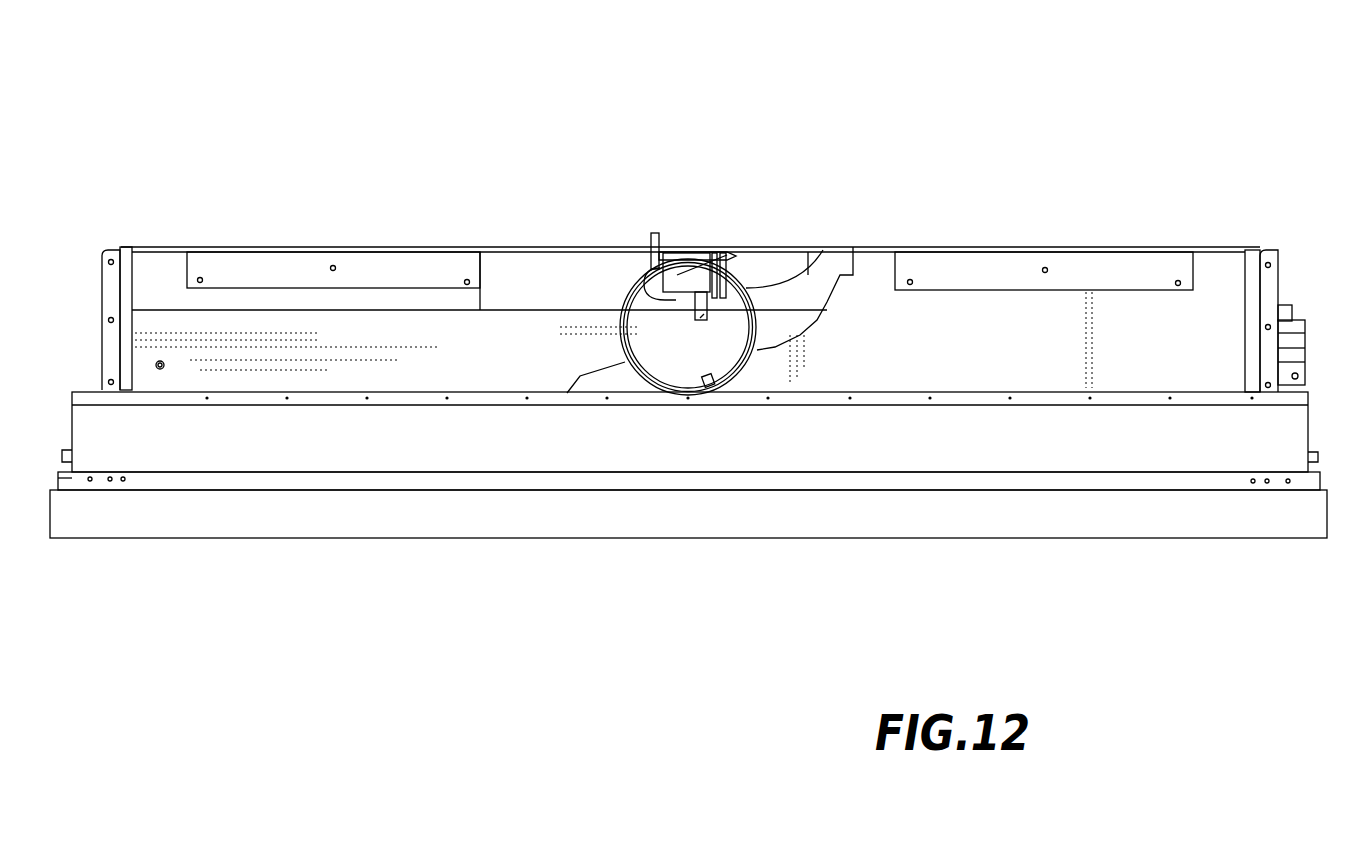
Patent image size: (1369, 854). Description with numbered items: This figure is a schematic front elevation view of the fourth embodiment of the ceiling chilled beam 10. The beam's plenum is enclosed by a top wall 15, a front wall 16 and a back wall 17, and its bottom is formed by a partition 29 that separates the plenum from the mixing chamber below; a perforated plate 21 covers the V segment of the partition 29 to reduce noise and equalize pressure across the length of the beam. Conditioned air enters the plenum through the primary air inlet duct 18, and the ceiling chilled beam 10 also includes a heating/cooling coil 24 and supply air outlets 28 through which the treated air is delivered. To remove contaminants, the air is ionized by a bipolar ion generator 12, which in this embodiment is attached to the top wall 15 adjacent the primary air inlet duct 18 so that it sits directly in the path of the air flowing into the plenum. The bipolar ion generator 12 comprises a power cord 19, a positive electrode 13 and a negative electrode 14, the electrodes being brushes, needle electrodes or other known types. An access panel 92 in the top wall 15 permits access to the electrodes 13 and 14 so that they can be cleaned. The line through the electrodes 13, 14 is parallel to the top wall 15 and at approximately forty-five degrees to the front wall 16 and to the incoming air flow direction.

The ceiling chilled beam 10 is at (291, 155).
The bipolar ion generator 12 is at (683, 272).
The positive electrode 13 is at (673, 298).
The negative electrode 14 is at (703, 317).
The top wall 15 is at (340, 248).
The front wall 16 is at (965, 323).
The back wall 17 is at (687, 372).
The primary air inlet duct 18 is at (808, 272).
The power cord 19 is at (647, 238).
The perforated plate 21 is at (493, 310).
The heating/cooling coil 24 is at (1305, 332).
The supply air outlets 28 is at (1105, 540).
The partition 29 is at (240, 343).
The access panel 92 is at (716, 275).